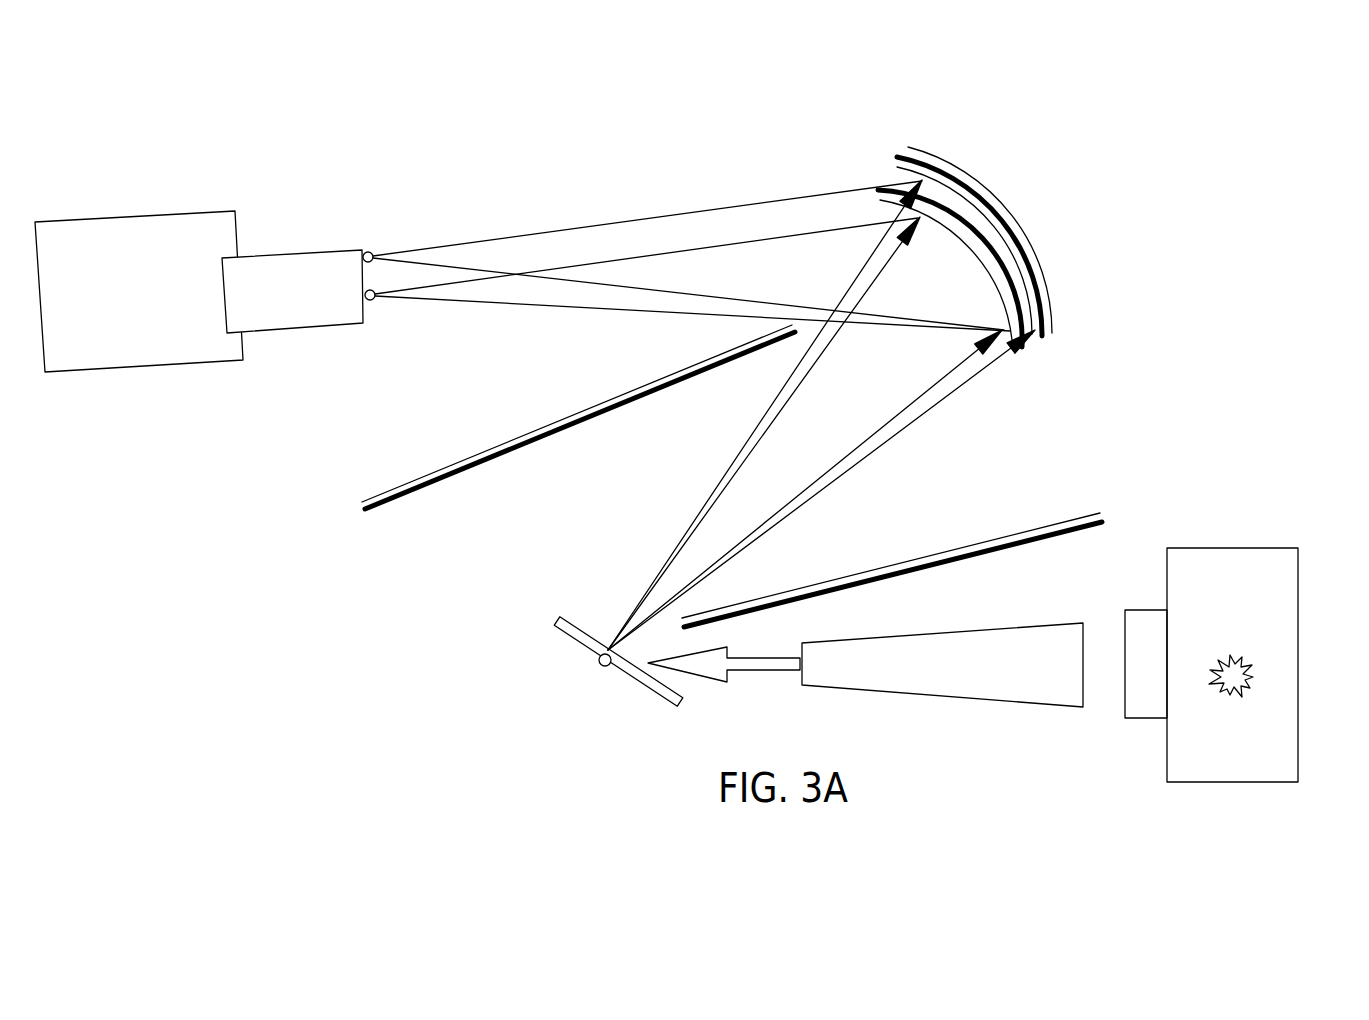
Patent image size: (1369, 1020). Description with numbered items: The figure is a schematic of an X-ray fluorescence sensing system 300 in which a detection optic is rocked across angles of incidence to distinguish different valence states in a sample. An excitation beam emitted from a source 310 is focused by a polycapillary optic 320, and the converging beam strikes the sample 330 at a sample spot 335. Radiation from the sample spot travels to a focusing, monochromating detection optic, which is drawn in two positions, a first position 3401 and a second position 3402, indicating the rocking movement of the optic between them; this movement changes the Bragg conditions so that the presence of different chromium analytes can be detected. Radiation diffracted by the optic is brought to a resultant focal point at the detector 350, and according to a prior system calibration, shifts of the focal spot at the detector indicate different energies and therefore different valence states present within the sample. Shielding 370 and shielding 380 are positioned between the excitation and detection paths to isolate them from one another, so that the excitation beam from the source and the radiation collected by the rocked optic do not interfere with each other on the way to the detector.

The system 300 is at (879, 78).
The source 310 is at (1262, 548).
The polycapillary optic 320 is at (977, 699).
The sample 330 is at (652, 690).
The sample spot 335 is at (577, 666).
The first position of detection optic 3401 is at (1050, 313).
The second position of detection optic 3402 is at (955, 167).
The detector 350 is at (175, 211).
The shielding 370 is at (1052, 520).
The shielding 380 is at (412, 482).